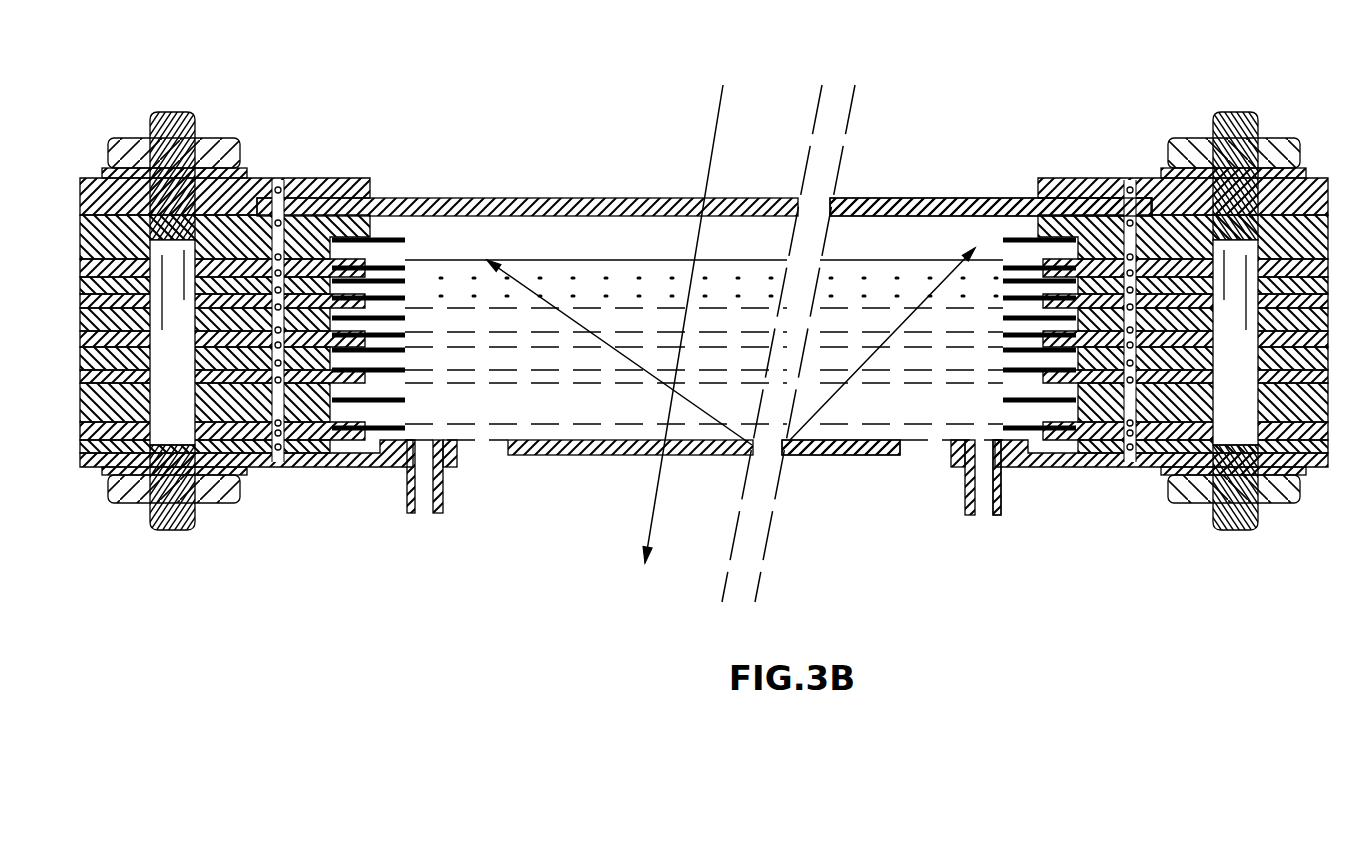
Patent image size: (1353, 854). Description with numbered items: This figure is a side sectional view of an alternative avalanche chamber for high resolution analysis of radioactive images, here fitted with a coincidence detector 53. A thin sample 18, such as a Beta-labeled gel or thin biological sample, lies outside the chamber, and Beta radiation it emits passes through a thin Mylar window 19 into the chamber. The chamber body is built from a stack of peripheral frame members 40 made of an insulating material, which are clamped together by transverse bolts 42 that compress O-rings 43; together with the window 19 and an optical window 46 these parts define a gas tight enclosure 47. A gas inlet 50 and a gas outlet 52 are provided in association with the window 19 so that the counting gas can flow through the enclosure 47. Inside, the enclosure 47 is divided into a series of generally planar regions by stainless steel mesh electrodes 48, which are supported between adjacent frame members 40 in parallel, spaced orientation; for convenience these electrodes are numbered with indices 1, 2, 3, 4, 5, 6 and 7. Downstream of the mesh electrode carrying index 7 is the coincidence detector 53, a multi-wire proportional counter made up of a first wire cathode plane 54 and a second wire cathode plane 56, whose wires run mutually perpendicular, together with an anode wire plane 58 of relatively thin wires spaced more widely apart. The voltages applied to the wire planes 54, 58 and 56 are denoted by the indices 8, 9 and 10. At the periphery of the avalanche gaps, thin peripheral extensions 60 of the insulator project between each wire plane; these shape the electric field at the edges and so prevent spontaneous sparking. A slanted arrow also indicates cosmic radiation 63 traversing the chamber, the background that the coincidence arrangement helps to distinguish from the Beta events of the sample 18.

The mesh electrode index 1 is at (78, 442).
The mesh electrode index 2 is at (78, 425).
The mesh electrode index 3 is at (78, 385).
The mesh electrode index 4 is at (78, 370).
The mesh electrode index 5 is at (78, 348).
The mesh electrode index 6 is at (78, 332).
The mesh electrode index 7 is at (78, 308).
The wire plane voltage index 8 is at (78, 295).
The wire plane voltage index 9 is at (78, 277).
The wire plane voltage index 10 is at (78, 258).
The sample 18 is at (570, 456).
The window 19 is at (475, 443).
The peripheral frame member 40 is at (1330, 300).
The transverse bolt 42 is at (185, 165).
The O-ring 43 is at (1122, 470).
The optical window 46 is at (857, 208).
The gas tight enclosure 47 is at (942, 242).
The mesh electrode 48 is at (443, 375).
The gas inlet 50 is at (447, 487).
The gas outlet 52 is at (1000, 492).
The coincidence detector 53 is at (445, 380).
The first wire cathode plane 54 is at (560, 293).
The second wire cathode plane 56 is at (720, 260).
The anode wire plane 58 is at (853, 280).
The peripheral extension 60 is at (405, 347).
The cosmic radiation 63 is at (648, 515).